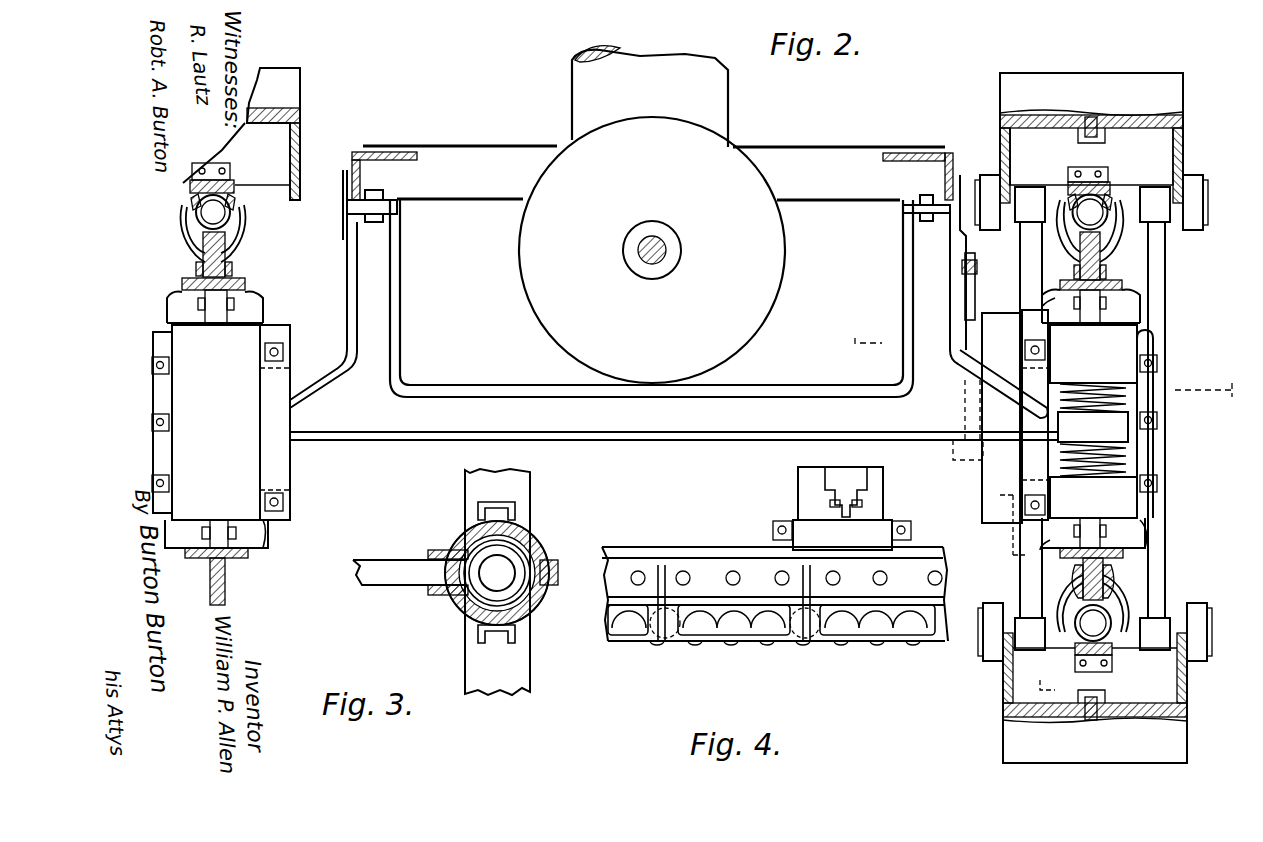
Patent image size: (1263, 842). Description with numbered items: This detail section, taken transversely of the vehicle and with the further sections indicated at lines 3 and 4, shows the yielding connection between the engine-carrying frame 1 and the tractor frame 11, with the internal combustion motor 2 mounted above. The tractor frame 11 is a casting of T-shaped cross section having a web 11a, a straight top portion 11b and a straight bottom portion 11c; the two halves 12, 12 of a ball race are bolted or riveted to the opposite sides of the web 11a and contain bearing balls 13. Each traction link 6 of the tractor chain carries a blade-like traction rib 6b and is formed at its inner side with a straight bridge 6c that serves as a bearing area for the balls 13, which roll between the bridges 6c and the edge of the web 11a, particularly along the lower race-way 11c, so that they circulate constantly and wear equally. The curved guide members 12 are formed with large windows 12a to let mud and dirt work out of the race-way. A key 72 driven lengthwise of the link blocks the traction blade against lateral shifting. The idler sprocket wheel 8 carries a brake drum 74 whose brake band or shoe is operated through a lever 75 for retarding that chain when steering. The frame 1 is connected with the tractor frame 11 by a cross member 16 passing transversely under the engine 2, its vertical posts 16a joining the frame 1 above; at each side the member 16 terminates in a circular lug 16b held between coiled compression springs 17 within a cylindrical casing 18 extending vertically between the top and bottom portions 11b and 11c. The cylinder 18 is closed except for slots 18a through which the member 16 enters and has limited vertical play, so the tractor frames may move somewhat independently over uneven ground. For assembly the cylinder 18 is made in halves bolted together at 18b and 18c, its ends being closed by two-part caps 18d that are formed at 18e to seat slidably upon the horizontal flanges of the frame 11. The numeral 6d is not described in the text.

In FIG. 2, the frame 1 is at (405, 163).
In FIG. 2, the internal combustion motor 2 is at (652, 214).
In FIG. 2, the fuel tank 3 is at (1040, 365).
In FIG. 2, the water cooling radiator 4 is at (1033, 595).
In FIG. 2, the traction link 6 is at (1010, 152).
In FIG. 2, the traction rib 6b is at (1055, 73).
In FIG. 2, the bridge 6c is at (1110, 178).
In FIG. 2, the post seat 6d is at (1038, 165).
In FIG. 2, the idler sprocket wheel 8 is at (1025, 253).
In FIG. 2, the tractor frame 11 is at (200, 284).
In FIG. 3, the tractor frame 11 is at (520, 482).
In FIG. 4, the tractor frame 11 is at (725, 522).
In FIG. 2, the web 11a is at (1097, 597).
In FIG. 2, the top portion 11b is at (248, 290).
In FIG. 2, the bottom portion 11c is at (1130, 545).
In FIG. 4, the bottom portion 11c is at (905, 545).
In FIG. 2, the ball race half 12 is at (160, 225).
In FIG. 4, the ball race half 12 is at (786, 579).
In FIG. 2, the window 12a is at (1145, 225).
In FIG. 4, the window 12a is at (633, 612).
In FIG. 2, the bearing ball 13 is at (1085, 195).
In FIG. 4, the bearing ball 13 is at (770, 640).
In FIG. 2, the cross member 16 is at (674, 421).
In FIG. 3, the cross member 16 is at (372, 560).
In FIG. 2, the post 16a is at (385, 315).
In FIG. 2, the circular lug 16b is at (1118, 430).
In FIG. 3, the circular lug 16b is at (470, 595).
In FIG. 2, the coiled compression spring 17 is at (1075, 395).
In FIG. 3, the coiled compression spring 17 is at (475, 555).
In FIG. 2, the cylindrical casing 18 is at (1122, 342).
In FIG. 3, the cylindrical casing 18 is at (538, 545).
In FIG. 4, the cylindrical casing 18 is at (883, 485).
In FIG. 2, the slot 18a is at (1040, 463).
In FIG. 3, the slot 18a is at (445, 580).
In FIG. 4, the slot 18a is at (840, 475).
In FIG. 2, the bolt connection 18b is at (1045, 505).
In FIG. 4, the bolt connection 18b is at (830, 503).
In FIG. 2, the bolt connection 18c is at (1150, 412).
In FIG. 3, the bolt connection 18c is at (555, 560).
In FIG. 2, the two-part cap 18d is at (1130, 305).
In FIG. 2, the cap seat 18e is at (1130, 300).
In FIG. 2, the key 72 is at (1092, 117).
In FIG. 2, the brake drum 74 is at (992, 460).
In FIG. 2, the lever 75 is at (975, 298).